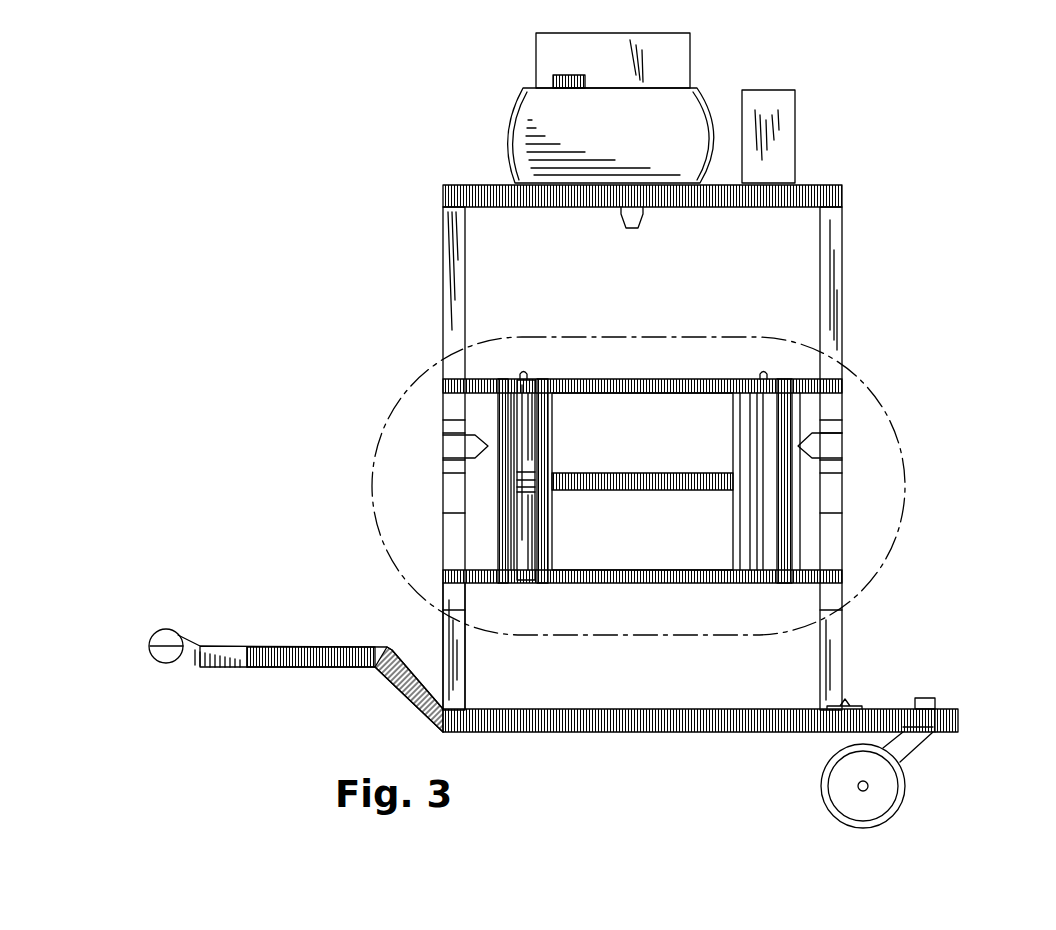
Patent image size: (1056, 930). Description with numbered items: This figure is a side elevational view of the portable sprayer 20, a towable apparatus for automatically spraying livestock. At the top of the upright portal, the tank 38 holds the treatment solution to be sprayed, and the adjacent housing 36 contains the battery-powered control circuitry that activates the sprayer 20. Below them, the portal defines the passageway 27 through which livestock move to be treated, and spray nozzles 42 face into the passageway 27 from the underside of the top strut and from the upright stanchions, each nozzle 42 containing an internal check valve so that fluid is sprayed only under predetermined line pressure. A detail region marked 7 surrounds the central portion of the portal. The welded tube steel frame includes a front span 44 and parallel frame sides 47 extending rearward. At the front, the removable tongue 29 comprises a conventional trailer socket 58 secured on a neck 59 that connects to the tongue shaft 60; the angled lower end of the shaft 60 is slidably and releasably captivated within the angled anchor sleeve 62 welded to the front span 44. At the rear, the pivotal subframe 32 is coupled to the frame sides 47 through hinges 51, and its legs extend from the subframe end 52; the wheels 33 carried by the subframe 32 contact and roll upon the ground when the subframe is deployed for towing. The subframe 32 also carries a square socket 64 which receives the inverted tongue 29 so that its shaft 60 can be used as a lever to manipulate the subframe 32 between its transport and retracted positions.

The detail region shown in FIG. 7 is at (372, 460).
The portable sprayer 20 is at (973, 377).
The passageway 27 is at (618, 286).
The removable tongue 29 is at (317, 638).
The subframe 32 is at (883, 703).
The wheels 33 is at (887, 795).
The housing 36 is at (785, 148).
The tank 38 is at (695, 100).
The spray nozzles 42 is at (632, 228).
The front span 44 is at (462, 718).
The frame sides 47 is at (560, 723).
The hinges 51 is at (843, 705).
The subframe end 52 is at (952, 723).
The trailer socket 58 is at (162, 630).
The neck 59 is at (230, 652).
The tongue shaft 60 is at (320, 667).
The anchor sleeve 62 is at (423, 710).
The square socket 64 is at (933, 698).